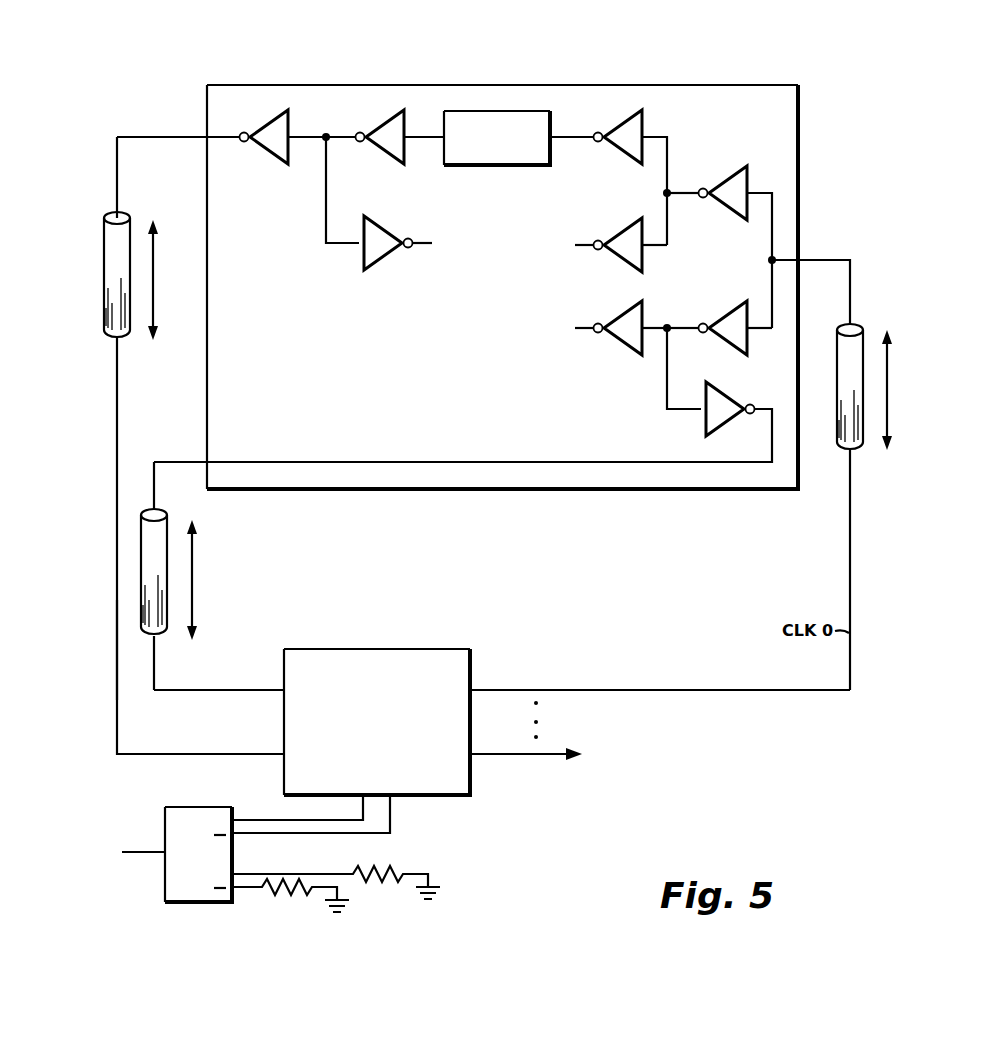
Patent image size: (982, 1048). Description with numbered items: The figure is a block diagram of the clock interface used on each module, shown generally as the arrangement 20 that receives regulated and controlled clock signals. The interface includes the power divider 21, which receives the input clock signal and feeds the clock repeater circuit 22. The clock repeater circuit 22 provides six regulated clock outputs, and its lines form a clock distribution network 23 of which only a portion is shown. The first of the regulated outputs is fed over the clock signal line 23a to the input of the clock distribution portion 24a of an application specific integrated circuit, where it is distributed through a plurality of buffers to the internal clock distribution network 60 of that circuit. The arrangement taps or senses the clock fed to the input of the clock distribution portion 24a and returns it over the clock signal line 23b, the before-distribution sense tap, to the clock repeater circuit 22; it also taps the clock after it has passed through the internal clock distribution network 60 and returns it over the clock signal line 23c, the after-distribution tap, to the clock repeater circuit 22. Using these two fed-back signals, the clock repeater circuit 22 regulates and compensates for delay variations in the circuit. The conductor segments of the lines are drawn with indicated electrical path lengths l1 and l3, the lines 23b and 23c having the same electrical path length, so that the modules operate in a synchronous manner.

The delay line ring oscillator circuit 20 is at (144, 102).
The power divider 21 is at (138, 818).
The clock repeater circuit 22 is at (338, 649).
The clock distribution network 23 is at (100, 634).
The clock signal line 23a is at (505, 690).
The clock signal line 23b is at (205, 690).
The clock signal line 23c is at (140, 137).
The clock distribution portion 24a is at (798, 158).
The internal clock distribution network 60 is at (472, 165).
The conductor length l1 is at (863, 395).
The conductor length l3 is at (130, 278).